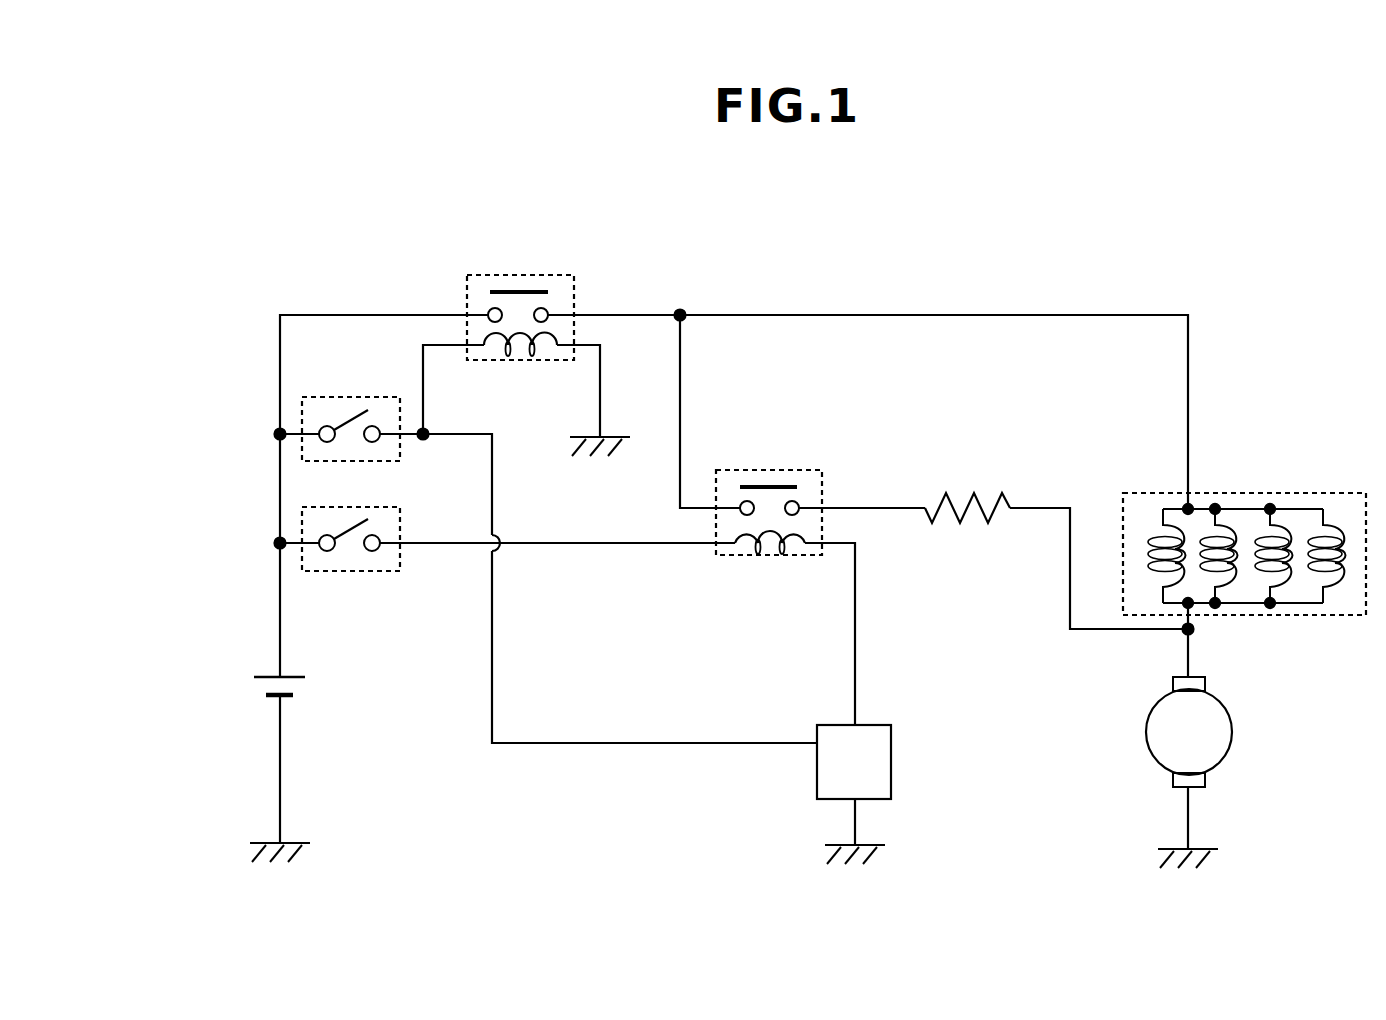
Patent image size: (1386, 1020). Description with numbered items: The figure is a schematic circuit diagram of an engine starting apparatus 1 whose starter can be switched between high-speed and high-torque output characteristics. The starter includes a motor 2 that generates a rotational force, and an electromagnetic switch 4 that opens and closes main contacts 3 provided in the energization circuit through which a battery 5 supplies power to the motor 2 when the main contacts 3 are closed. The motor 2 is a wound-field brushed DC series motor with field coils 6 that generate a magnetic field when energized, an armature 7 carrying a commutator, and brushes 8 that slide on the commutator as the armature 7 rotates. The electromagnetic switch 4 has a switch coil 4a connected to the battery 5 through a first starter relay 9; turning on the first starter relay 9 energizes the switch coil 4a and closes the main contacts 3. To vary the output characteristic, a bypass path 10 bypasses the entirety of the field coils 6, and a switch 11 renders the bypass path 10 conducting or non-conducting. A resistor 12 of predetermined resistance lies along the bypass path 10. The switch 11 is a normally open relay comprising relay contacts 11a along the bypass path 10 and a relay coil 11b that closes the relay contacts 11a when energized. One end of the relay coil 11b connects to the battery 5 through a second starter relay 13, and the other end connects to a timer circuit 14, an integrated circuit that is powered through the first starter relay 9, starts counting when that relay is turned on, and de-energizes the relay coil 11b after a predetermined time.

The engine starting apparatus 1 is at (992, 236).
The motor 2 is at (1300, 663).
The main contacts 3 is at (540, 305).
The electromagnetic switch 4 is at (561, 270).
The switch coil 4a is at (508, 345).
The battery 5 is at (257, 687).
The field coils 6 is at (1238, 622).
The armature 7 is at (1227, 736).
The brushes 8 is at (1197, 780).
The first starter relay 9 is at (355, 415).
The bypass path 10 is at (1033, 508).
The switch 11 is at (807, 468).
The relay contacts 11a is at (790, 500).
The relay coil 11b is at (760, 543).
The resistor 12 is at (952, 512).
The second starter relay 13 is at (355, 524).
The timer circuit 14 is at (817, 773).